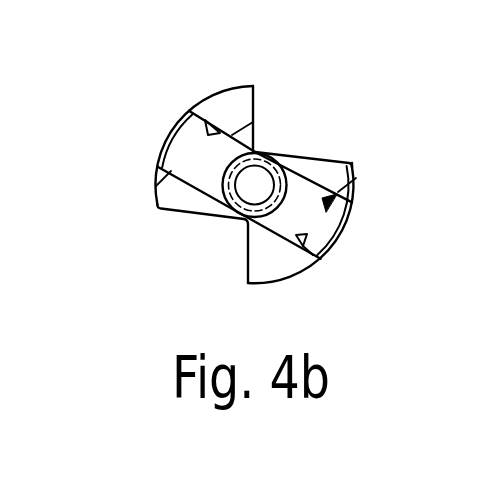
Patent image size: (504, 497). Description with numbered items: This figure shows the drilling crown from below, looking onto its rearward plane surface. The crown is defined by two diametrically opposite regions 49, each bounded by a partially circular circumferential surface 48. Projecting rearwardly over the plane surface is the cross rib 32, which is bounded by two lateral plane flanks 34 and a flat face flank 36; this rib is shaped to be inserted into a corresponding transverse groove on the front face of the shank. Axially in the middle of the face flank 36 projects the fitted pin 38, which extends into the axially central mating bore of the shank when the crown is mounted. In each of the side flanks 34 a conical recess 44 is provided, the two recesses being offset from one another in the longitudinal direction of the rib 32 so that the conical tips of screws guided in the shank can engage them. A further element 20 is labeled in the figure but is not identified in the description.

The cutter body 20 is at (302, 152).
The cross rib 32 is at (357, 173).
The lateral plane flank 34 is at (255, 150).
The face flank 36 is at (325, 225).
The fitted pin 38 is at (270, 148).
The conical recess 44 is at (208, 119).
The circumferential surface 48 is at (303, 263).
The region 49 is at (348, 191).